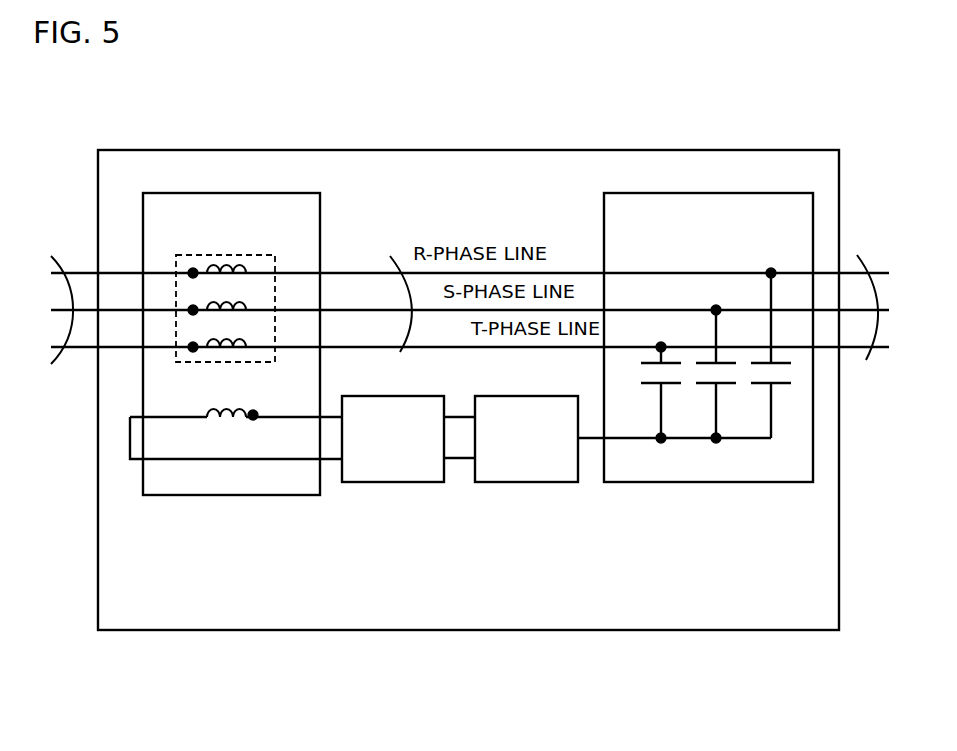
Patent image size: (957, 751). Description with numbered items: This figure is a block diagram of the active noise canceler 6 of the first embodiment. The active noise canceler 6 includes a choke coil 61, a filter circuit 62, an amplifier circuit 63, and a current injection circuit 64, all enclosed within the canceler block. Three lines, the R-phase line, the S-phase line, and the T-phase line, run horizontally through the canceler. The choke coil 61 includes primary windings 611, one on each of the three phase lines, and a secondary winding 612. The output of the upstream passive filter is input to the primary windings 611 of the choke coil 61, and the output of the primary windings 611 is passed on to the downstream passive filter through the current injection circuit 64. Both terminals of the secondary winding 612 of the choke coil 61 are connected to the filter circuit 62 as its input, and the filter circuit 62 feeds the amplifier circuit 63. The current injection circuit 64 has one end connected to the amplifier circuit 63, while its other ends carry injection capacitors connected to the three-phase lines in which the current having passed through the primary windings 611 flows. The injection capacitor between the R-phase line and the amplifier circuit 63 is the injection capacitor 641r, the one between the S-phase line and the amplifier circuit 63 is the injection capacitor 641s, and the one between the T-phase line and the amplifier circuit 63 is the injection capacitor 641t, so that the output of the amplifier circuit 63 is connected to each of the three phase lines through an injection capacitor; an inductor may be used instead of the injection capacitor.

The active noise canceler 6 is at (296, 150).
The choke coil 61 is at (277, 193).
The primary windings 611 is at (275, 362).
The secondary winding 612 is at (205, 415).
The filter circuit 62 is at (423, 394).
The amplifier circuit 63 is at (526, 394).
The current injection circuit 64 is at (644, 193).
The injection capacitor 641t is at (647, 388).
The injection capacitor 641s is at (702, 388).
The injection capacitor 641r is at (757, 388).